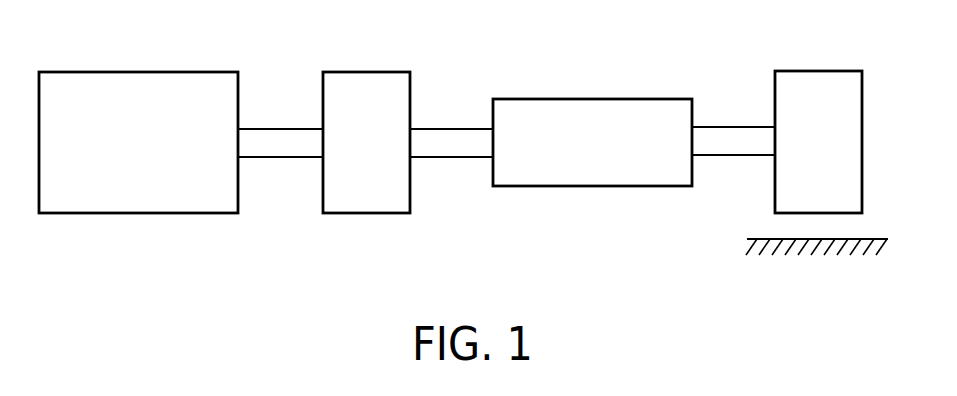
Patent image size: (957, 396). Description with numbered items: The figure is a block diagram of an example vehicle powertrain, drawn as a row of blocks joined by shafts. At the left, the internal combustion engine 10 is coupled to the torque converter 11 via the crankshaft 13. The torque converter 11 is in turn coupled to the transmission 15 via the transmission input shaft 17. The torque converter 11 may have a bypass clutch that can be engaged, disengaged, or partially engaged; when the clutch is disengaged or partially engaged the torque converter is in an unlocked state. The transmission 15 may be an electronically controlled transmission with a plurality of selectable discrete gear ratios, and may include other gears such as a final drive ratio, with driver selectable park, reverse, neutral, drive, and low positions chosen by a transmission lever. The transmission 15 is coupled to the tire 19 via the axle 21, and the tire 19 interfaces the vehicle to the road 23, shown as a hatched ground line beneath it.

The internal combustion engine 10 is at (138, 72).
The torque converter 11 is at (365, 72).
The crankshaft 13 is at (245, 127).
The transmission 15 is at (592, 99).
The transmission input shaft 17 is at (420, 127).
The tire 19 is at (818, 71).
The axle 21 is at (705, 127).
The road 23 is at (767, 238).